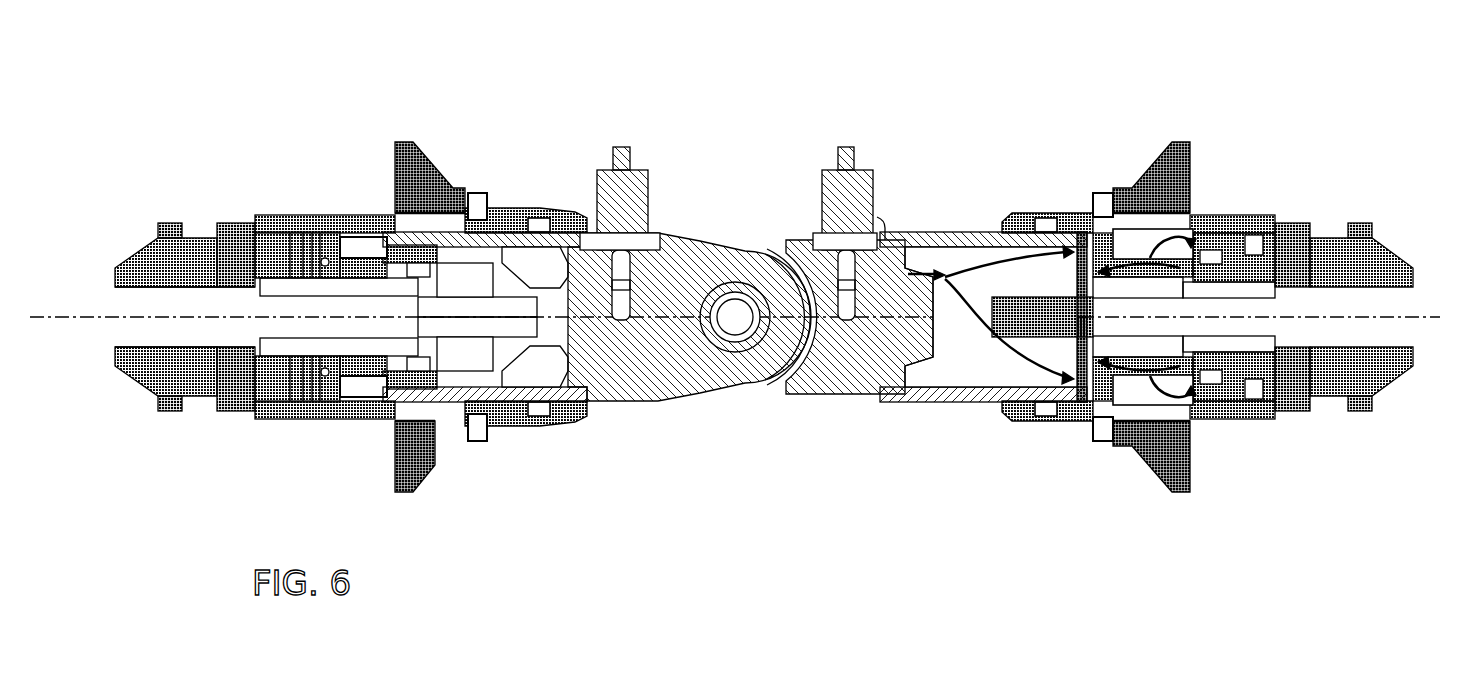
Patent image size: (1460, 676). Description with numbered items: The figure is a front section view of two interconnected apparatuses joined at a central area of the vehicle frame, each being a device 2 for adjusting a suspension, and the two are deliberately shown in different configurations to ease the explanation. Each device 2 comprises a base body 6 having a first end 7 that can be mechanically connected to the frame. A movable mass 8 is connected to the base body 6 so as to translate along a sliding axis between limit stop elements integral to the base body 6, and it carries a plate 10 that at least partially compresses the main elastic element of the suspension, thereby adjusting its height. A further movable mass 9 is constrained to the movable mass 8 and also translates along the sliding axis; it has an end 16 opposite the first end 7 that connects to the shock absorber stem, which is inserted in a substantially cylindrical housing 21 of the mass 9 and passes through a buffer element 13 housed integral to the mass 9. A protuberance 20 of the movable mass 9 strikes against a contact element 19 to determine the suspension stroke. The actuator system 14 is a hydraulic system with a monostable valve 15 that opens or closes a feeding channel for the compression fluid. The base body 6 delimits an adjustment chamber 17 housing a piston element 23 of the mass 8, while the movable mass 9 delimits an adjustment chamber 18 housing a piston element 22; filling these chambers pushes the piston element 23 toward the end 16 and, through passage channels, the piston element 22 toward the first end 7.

The device 2 is at (268, 139).
The base body 6 is at (632, 404).
The first end 7 is at (756, 247).
The movable mass 8 is at (513, 207).
The movable mass 9 is at (232, 413).
The plate 10 is at (412, 141).
The buffer element 13 is at (133, 372).
The actuator system 14 is at (656, 178).
The monostable valve 15 is at (645, 198).
The end 16 is at (150, 232).
The adjustment chamber 17 is at (524, 271).
The adjustment chamber 18 is at (449, 289).
The contact element 19 is at (570, 420).
The protuberance 20 is at (520, 427).
The cylindrical housing 21 is at (228, 341).
The piston element 22 is at (423, 365).
The piston element 23 is at (308, 412).